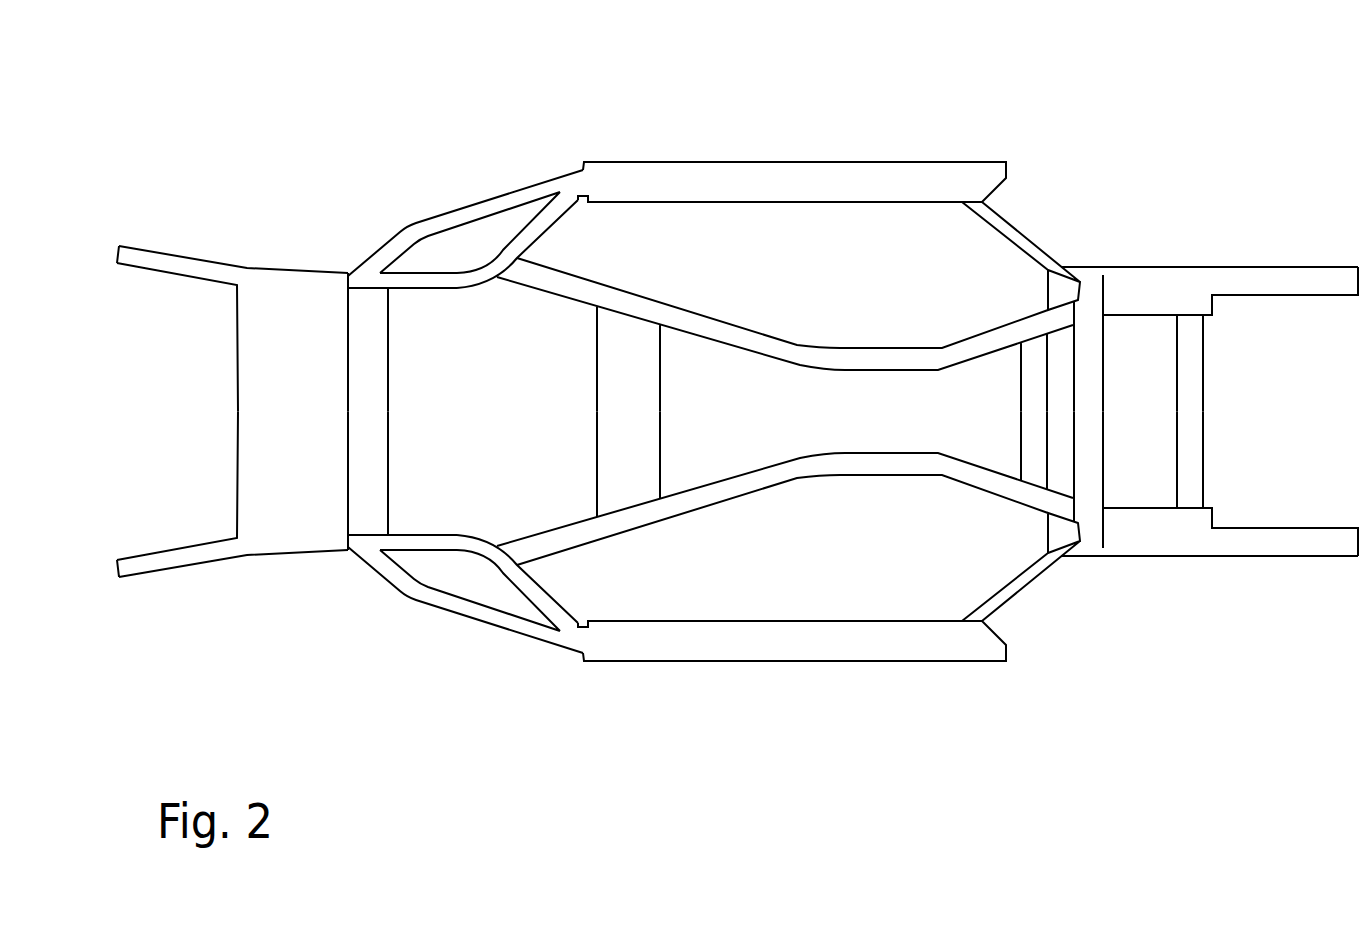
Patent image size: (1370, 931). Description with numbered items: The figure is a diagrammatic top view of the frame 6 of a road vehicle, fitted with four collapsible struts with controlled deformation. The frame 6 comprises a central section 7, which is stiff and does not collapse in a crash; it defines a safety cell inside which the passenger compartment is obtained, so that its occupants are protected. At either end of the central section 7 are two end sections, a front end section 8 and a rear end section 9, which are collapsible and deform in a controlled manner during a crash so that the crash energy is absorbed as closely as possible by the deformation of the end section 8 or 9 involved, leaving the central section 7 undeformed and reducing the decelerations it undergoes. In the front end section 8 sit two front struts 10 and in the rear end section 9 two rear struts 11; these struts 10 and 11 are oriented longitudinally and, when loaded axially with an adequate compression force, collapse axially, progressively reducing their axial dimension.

The frame 6 is at (737, 398).
The central section 7 is at (793, 87).
The front end section 8 is at (239, 161).
The rear end section 9 is at (1224, 167).
The front struts 10 is at (158, 260).
The rear struts 11 is at (1293, 278).